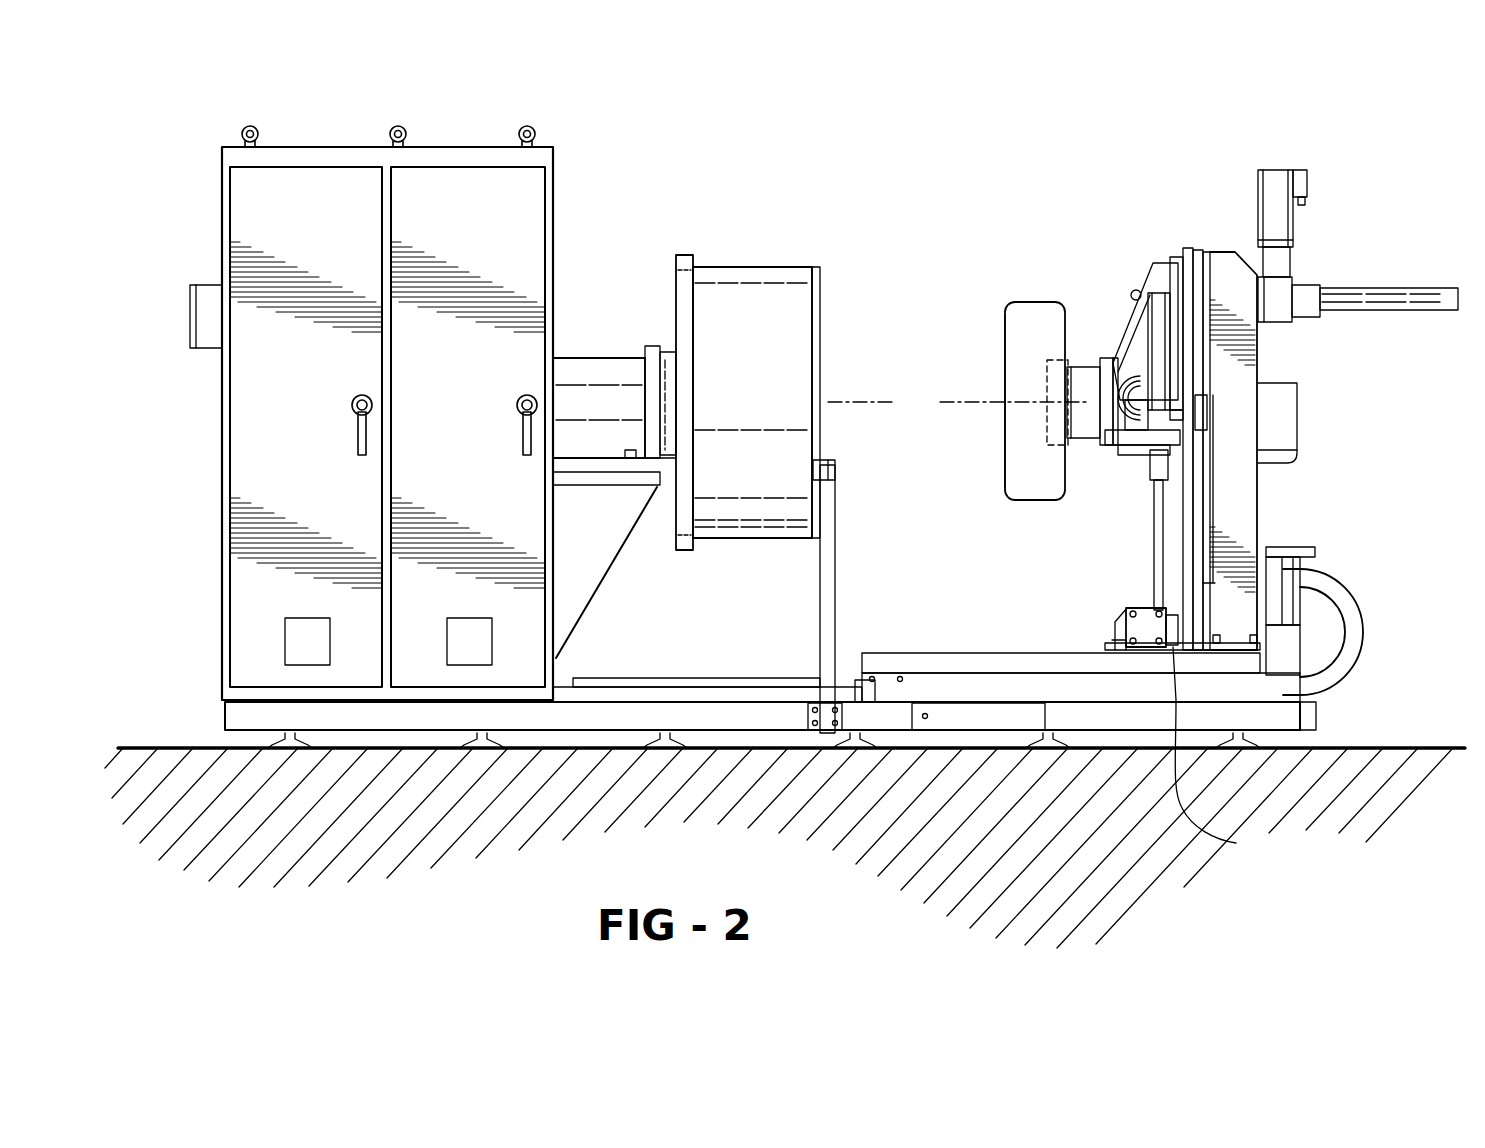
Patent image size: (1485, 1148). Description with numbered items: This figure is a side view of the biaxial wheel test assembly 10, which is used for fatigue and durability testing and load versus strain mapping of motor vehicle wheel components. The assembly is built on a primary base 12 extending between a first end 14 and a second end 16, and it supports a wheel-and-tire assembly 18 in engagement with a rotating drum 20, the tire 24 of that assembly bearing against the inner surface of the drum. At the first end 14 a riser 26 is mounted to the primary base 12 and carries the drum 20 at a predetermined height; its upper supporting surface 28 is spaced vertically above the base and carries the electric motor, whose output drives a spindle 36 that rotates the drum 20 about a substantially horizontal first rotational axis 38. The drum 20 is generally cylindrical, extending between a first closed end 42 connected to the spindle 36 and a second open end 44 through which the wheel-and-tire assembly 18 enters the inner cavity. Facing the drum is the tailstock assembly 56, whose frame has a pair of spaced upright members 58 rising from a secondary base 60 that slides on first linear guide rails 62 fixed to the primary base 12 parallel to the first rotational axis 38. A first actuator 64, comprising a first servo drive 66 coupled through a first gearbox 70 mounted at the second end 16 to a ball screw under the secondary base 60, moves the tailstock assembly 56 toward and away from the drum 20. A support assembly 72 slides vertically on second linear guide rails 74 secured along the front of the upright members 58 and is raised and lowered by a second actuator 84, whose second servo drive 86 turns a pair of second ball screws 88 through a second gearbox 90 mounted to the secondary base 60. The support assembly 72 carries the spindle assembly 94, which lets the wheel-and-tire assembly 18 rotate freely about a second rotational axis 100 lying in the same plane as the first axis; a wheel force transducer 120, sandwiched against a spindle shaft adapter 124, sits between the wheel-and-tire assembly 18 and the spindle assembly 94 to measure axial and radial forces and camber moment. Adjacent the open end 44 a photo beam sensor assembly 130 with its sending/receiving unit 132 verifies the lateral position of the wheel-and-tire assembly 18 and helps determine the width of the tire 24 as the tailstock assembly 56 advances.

The biaxial wheel test assembly 10 is at (943, 147).
The primary base 12 is at (652, 705).
The first end 14 is at (222, 718).
The second end 16 is at (1316, 713).
The wheel-and-tire assembly 18 is at (1035, 302).
The rotating drum 20 is at (743, 272).
The tire 24 is at (1004, 325).
The riser 26 is at (578, 582).
The upper supporting surface 28 is at (594, 466).
The spindle 36 is at (612, 368).
The first rotational axis 38 is at (850, 402).
The first closed end 42 is at (682, 278).
The second open end 44 is at (816, 297).
The tailstock assembly 56 is at (1222, 252).
The upright members 58 is at (1237, 504).
The secondary base 60 is at (992, 654).
The first linear guide rails 62 is at (778, 677).
The first actuator 64 is at (1316, 547).
The first servo drive 66 is at (1290, 603).
The first gearbox 70 is at (1285, 666).
The support assembly 72 is at (1153, 263).
The second linear guide rails 74 is at (1160, 567).
The second actuator 84 is at (1219, 753).
The second servo drive 86 is at (1135, 628).
The second ball screws 88 is at (1155, 546).
The second gearbox 90 is at (1172, 630).
The spindle assembly 94 is at (1302, 413).
The second rotational axis 100 is at (970, 405).
The wheel force transducer 120 is at (1047, 362).
The spindle shaft adapter 124 is at (1080, 433).
The photo beam sensor assembly 130 is at (835, 613).
The sending/receiving unit 132 is at (842, 470).